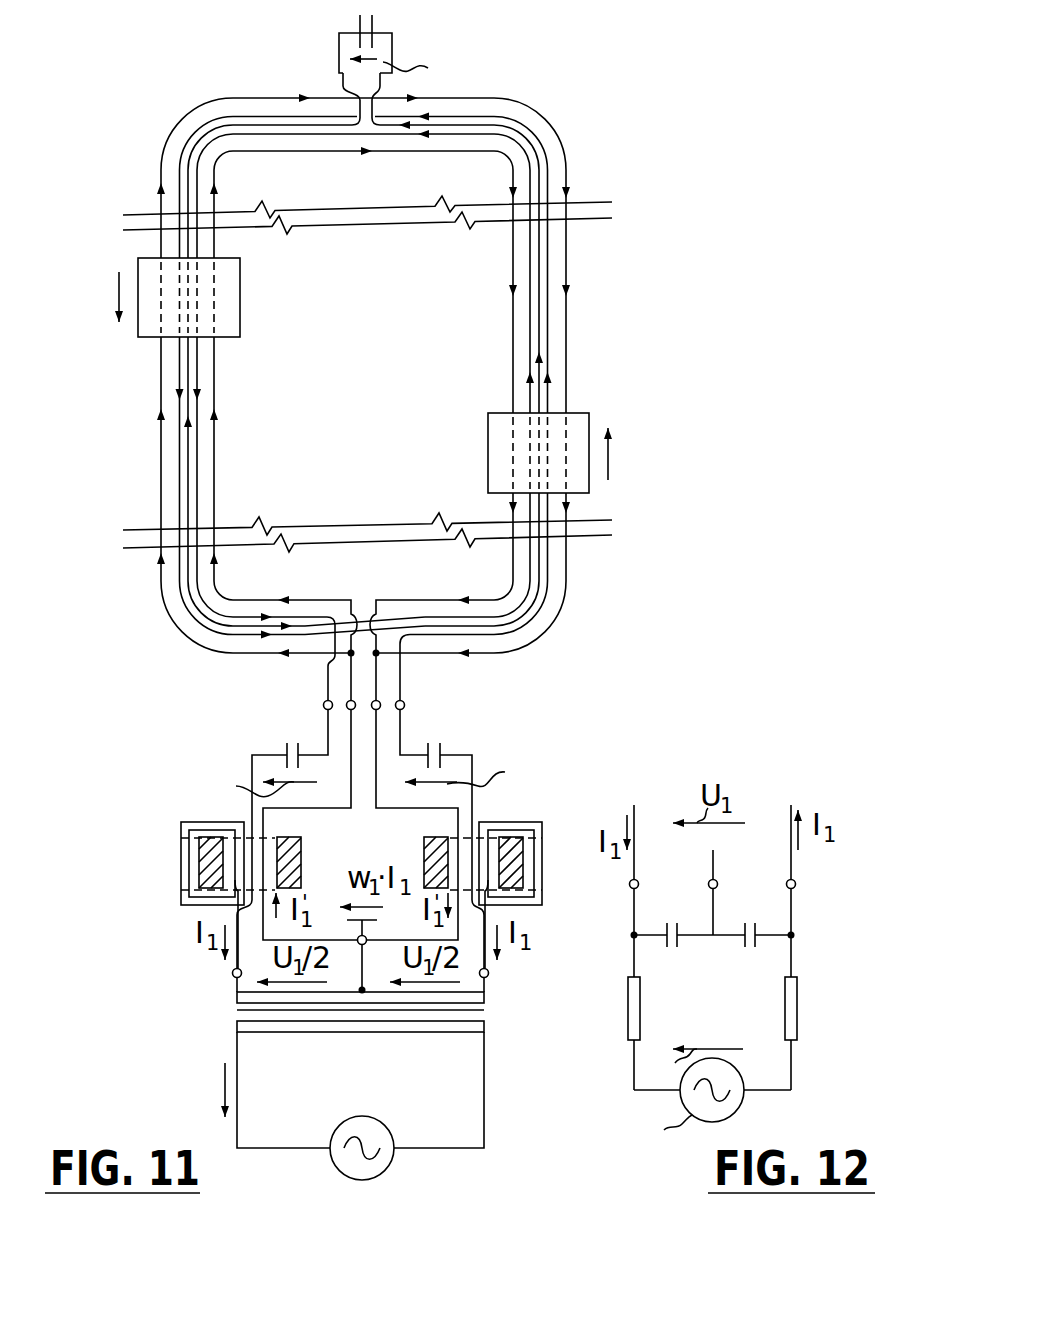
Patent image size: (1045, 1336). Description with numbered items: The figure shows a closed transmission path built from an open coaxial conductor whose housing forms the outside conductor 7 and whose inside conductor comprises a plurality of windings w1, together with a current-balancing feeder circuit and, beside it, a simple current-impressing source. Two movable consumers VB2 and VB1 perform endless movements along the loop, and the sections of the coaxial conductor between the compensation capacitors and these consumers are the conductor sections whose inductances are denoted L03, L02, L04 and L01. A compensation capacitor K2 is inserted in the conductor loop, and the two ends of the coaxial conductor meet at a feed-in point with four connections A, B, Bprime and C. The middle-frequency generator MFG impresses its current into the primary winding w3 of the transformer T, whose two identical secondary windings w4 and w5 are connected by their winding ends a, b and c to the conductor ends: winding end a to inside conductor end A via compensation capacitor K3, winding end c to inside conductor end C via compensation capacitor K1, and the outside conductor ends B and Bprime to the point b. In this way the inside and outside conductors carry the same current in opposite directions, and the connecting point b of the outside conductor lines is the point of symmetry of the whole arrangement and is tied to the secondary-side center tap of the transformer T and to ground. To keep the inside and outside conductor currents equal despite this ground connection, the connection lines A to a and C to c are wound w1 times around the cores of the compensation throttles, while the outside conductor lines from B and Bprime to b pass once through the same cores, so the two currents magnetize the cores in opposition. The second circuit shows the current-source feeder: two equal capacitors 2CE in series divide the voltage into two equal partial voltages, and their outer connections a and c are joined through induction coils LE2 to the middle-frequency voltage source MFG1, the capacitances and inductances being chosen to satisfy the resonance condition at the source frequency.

In FIG. 11, the outside conductor 7 is at (532, 110).
In FIG. 11, the inductance of coaxial conductor section L03 is at (183, 152).
In FIG. 11, the inductance of coaxial conductor section L02 is at (589, 375).
In FIG. 11, the inductance of coaxial conductor section L04 is at (116, 438).
In FIG. 11, the inductance of coaxial conductor section L01 is at (545, 615).
In FIG. 11, the inside conductor windings w1 is at (550, 266).
In FIG. 11, the compensation capacitor K2 is at (373, 24).
In FIG. 11, the movable consumer VB2 is at (242, 298).
In FIG. 11, the movable consumer VB1 is at (486, 462).
In FIG. 11, the inside conductor connection A is at (323, 706).
In FIG. 11, the outside conductor connection B is at (342, 701).
In FIG. 11, the outside conductor connection Bprime is at (384, 701).
In FIG. 11, the inside conductor connection C is at (405, 706).
In FIG. 11, the compensation capacitor K3 is at (287, 745).
In FIG. 11, the compensation capacitor K1 is at (441, 745).
In FIG. 11, the winding end a is at (233, 974).
In FIG. 12, the winding end a is at (639, 882).
In FIG. 11, the winding end b is at (360, 936).
In FIG. 12, the winding end b is at (717, 882).
In FIG. 11, the winding end c is at (488, 974).
In FIG. 12, the winding end c is at (795, 882).
In FIG. 11, the transformer T is at (321, 1043).
In FIG. 11, the secondary winding w4 is at (233, 1004).
In FIG. 11, the secondary winding w5 is at (488, 1004).
In FIG. 11, the primary winding w3 is at (380, 1033).
In FIG. 11, the middle-frequency generator MFG is at (392, 1168).
In FIG. 12, the capacitor 2CE is at (670, 946).
In FIG. 12, the induction coil LE2 is at (641, 1010).
In FIG. 12, the middle-frequency voltage source MFG1 is at (745, 1075).